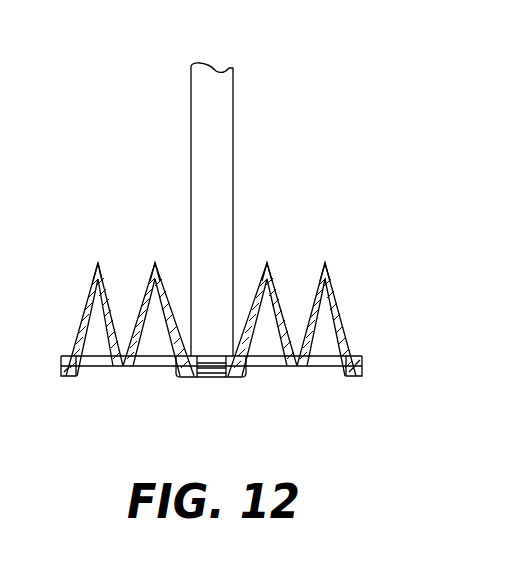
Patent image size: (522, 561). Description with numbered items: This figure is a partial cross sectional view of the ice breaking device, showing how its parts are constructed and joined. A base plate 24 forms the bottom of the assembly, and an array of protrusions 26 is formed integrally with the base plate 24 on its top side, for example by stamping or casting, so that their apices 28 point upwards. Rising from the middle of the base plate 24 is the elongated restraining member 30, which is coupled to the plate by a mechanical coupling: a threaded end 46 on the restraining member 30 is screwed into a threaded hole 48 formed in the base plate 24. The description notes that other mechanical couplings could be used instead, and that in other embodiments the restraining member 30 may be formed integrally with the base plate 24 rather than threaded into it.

The elongated restraining member 30 is at (191, 156).
The apices 28 is at (98, 263).
The protrusions 26 is at (82, 318).
The base plate 24 is at (61, 364).
The threaded end 46 is at (202, 393).
The threaded hole 48 is at (200, 377).